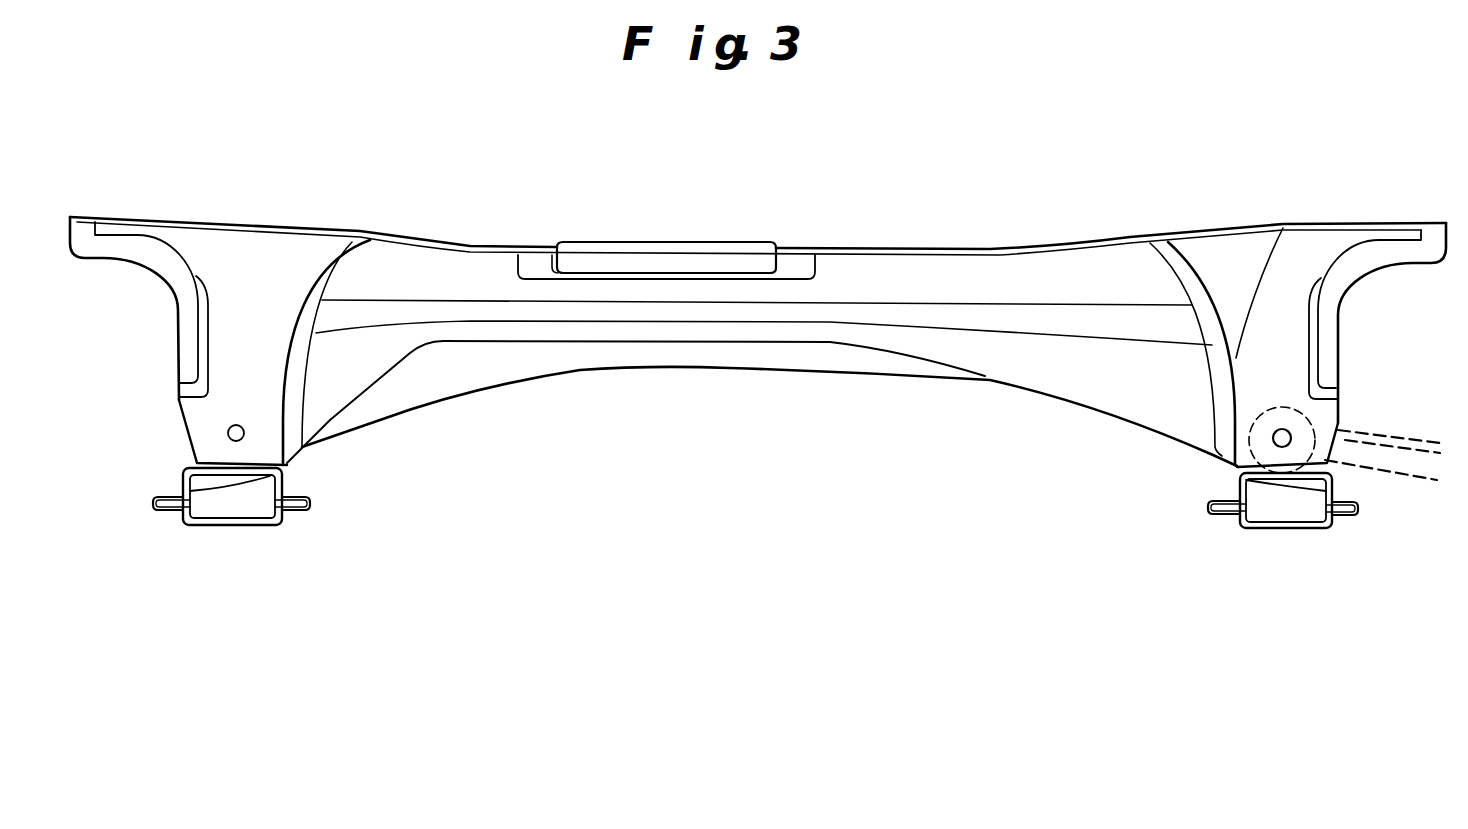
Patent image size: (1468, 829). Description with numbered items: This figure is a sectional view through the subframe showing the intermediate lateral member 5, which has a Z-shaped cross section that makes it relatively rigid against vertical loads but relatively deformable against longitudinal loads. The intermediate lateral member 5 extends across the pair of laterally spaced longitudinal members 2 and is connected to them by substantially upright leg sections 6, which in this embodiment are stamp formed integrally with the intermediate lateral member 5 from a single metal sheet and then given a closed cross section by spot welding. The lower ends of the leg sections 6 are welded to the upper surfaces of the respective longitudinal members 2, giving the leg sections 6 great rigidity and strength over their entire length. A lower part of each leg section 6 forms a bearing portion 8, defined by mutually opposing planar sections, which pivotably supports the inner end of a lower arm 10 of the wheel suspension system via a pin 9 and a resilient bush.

The longitudinal member 2 is at (283, 521).
The intermediate lateral member 5 is at (857, 260).
The leg section 6 is at (163, 377).
The bearing portion 8 is at (180, 464).
The pin 9 is at (1285, 446).
The lower arm 10 is at (1413, 433).